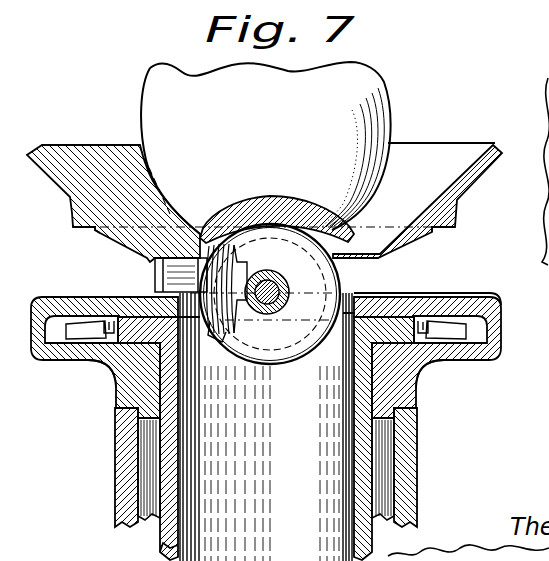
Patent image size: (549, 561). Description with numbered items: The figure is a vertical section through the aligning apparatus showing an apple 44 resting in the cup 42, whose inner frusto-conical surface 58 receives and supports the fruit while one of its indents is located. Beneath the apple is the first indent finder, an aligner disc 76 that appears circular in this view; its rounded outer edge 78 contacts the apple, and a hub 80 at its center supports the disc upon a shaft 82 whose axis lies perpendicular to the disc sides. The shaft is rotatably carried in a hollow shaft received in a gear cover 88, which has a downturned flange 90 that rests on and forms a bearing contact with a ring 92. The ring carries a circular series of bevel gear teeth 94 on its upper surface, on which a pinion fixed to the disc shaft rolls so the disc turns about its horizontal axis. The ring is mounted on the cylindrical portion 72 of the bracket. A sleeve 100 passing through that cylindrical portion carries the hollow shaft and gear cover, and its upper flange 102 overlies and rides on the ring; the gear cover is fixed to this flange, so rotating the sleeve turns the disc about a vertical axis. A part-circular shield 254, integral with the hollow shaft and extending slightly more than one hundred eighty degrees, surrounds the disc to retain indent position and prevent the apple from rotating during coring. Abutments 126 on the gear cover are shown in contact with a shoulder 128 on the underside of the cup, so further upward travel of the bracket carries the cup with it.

The apple 44 is at (316, 107).
The cup 42 is at (452, 138).
The inner frusto-conical surface 58 is at (436, 201).
The abutments 126 is at (137, 146).
The shoulder 128 is at (74, 228).
The flange 102 is at (133, 323).
The bevel gear teeth 94 is at (75, 320).
The gear cover 88 is at (486, 306).
The downturned flange 90 is at (500, 338).
The ring 92 is at (100, 368).
The cylindrical portion 72 is at (126, 455).
The sleeve 100 is at (163, 543).
The hub 80 is at (288, 288).
The shaft 82 is at (287, 302).
The outer edge 78 is at (298, 366).
The aligner disc 76 is at (279, 341).
The part-circular shield 254 is at (207, 338).